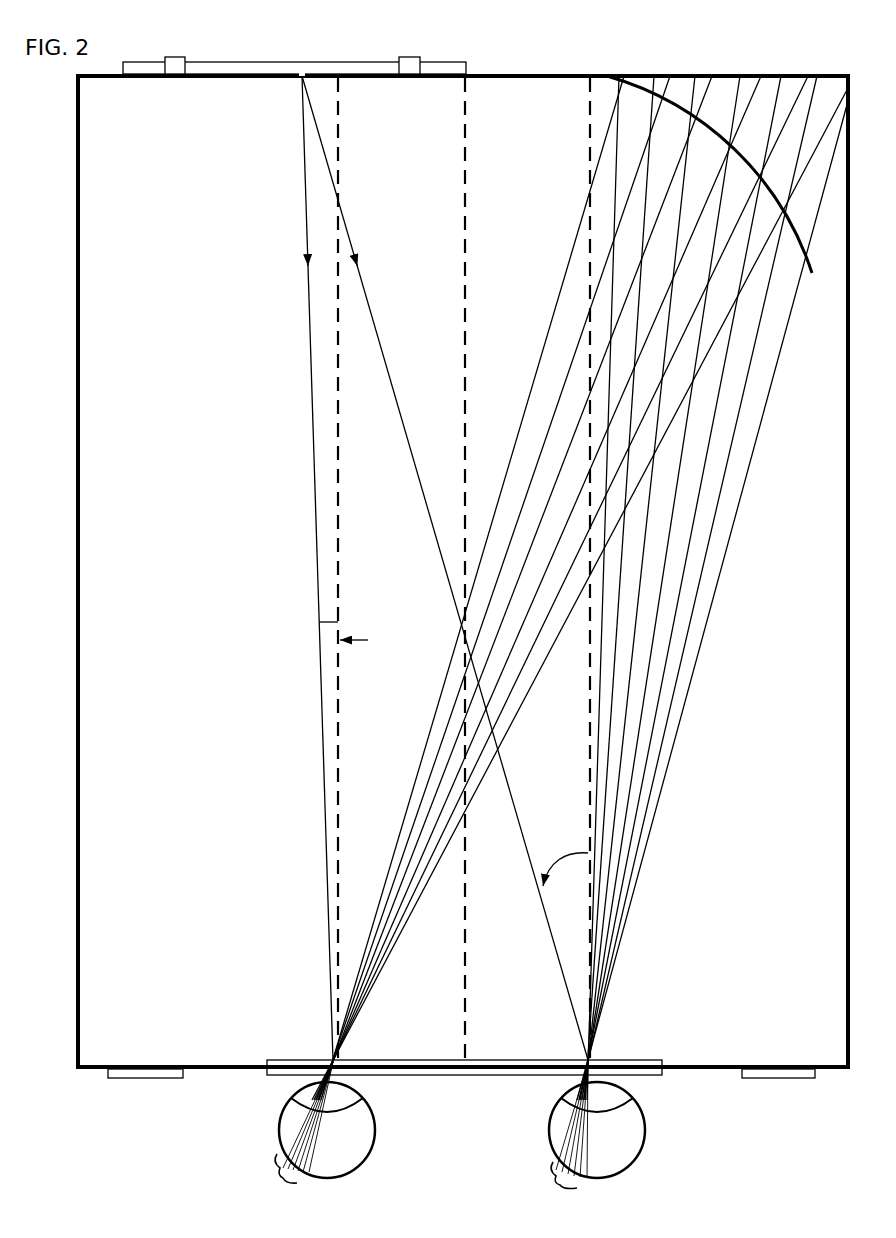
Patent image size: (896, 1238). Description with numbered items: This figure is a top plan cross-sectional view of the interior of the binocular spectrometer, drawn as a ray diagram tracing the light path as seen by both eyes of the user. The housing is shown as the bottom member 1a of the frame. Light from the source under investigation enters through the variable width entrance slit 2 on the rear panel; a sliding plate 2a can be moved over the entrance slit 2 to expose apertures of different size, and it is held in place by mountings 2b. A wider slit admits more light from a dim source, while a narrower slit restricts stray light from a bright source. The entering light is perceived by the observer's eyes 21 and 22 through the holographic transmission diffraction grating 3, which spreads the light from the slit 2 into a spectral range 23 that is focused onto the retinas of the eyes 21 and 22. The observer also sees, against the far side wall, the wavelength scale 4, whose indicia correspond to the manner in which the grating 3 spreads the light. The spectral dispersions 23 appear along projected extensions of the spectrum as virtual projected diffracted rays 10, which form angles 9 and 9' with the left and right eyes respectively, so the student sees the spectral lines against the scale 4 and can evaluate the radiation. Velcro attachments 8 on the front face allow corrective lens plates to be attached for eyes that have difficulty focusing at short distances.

The bottom member 1a is at (463, 571).
The entrance slit 2 is at (297, 80).
The sliding plate 2a is at (269, 56).
The mountings 2b is at (178, 56).
The holographic transmission diffraction grating 3 is at (303, 1052).
The wavelength scale 4 is at (602, 80).
The Velcro attachments 8 is at (143, 1081).
The angle 9 is at (314, 568).
The angle 9' is at (445, 568).
The virtual projected diffracted rays 10 is at (682, 773).
The eye 21 is at (291, 1130).
The eye 22 is at (640, 1130).
The spectral range 23 is at (419, 1125).